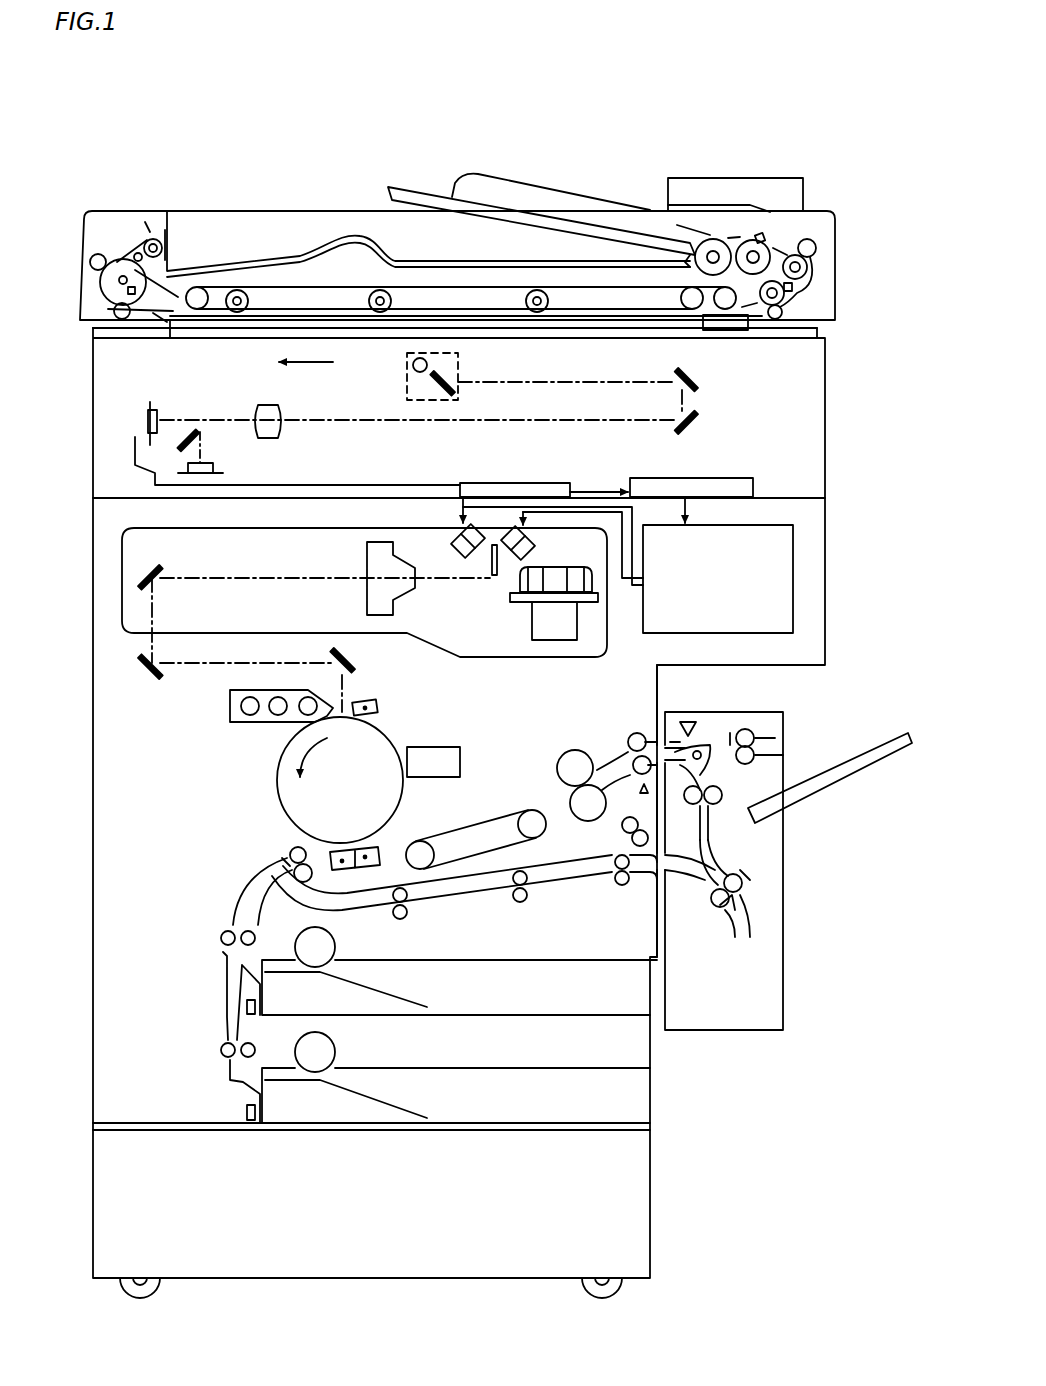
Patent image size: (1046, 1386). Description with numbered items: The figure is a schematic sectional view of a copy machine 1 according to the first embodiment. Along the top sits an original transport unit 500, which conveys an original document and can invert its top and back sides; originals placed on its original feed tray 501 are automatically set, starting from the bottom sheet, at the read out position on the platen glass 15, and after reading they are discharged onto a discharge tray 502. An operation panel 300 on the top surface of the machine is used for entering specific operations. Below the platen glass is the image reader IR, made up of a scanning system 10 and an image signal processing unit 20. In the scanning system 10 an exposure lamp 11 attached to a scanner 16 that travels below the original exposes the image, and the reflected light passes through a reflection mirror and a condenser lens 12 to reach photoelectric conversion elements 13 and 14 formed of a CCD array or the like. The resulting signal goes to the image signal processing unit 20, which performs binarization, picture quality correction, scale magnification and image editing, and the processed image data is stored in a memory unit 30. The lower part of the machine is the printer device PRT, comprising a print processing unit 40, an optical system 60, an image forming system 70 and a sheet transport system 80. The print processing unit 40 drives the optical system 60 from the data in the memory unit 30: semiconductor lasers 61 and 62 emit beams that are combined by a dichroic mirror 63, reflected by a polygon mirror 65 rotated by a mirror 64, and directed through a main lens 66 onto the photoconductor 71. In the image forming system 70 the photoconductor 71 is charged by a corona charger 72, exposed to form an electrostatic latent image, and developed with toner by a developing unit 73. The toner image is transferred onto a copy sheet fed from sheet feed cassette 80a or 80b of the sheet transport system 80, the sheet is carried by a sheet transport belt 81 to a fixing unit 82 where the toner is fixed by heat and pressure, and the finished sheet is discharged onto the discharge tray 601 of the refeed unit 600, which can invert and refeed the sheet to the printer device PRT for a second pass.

The copy machine 1 is at (121, 109).
The original transport unit 500 is at (905, 234).
The original feed tray 501 is at (522, 205).
The discharge tray 502 is at (215, 268).
The operation panel 300 is at (738, 178).
The image reader IR is at (837, 455).
The scanning system 10 is at (412, 410).
The exposure lamp 11 is at (412, 366).
The condenser lens 12 is at (284, 428).
The photoelectric conversion element 13 is at (157, 416).
The photoelectric conversion element 14 is at (213, 468).
The platen glass 15 is at (526, 325).
The scanner 16 is at (458, 362).
The image signal processing unit 20 is at (481, 485).
The memory unit 30 is at (644, 490).
The print processing unit 40 is at (778, 547).
The printer device PRT is at (895, 638).
The optical system 60 is at (282, 548).
The semiconductor laser 61 is at (538, 545).
The semiconductor laser 62 is at (455, 537).
The dichroic mirror 63 is at (493, 572).
The mirror 64 is at (555, 627).
The polygon mirror 65 is at (555, 583).
The main lens 66 is at (367, 600).
The image forming system 70 is at (458, 722).
The photoconductor 71 is at (340, 780).
The corona charger 72 is at (378, 708).
The developing unit 73 is at (230, 697).
The sheet transport system 80 is at (515, 794).
The sheet feed cassette 80a is at (605, 968).
The sheet feed cassette 80b is at (570, 1075).
The sheet transport belt 81 is at (440, 830).
The fixing unit 82 is at (578, 814).
The refeed unit 600 is at (860, 994).
The discharge tray 601 is at (877, 752).